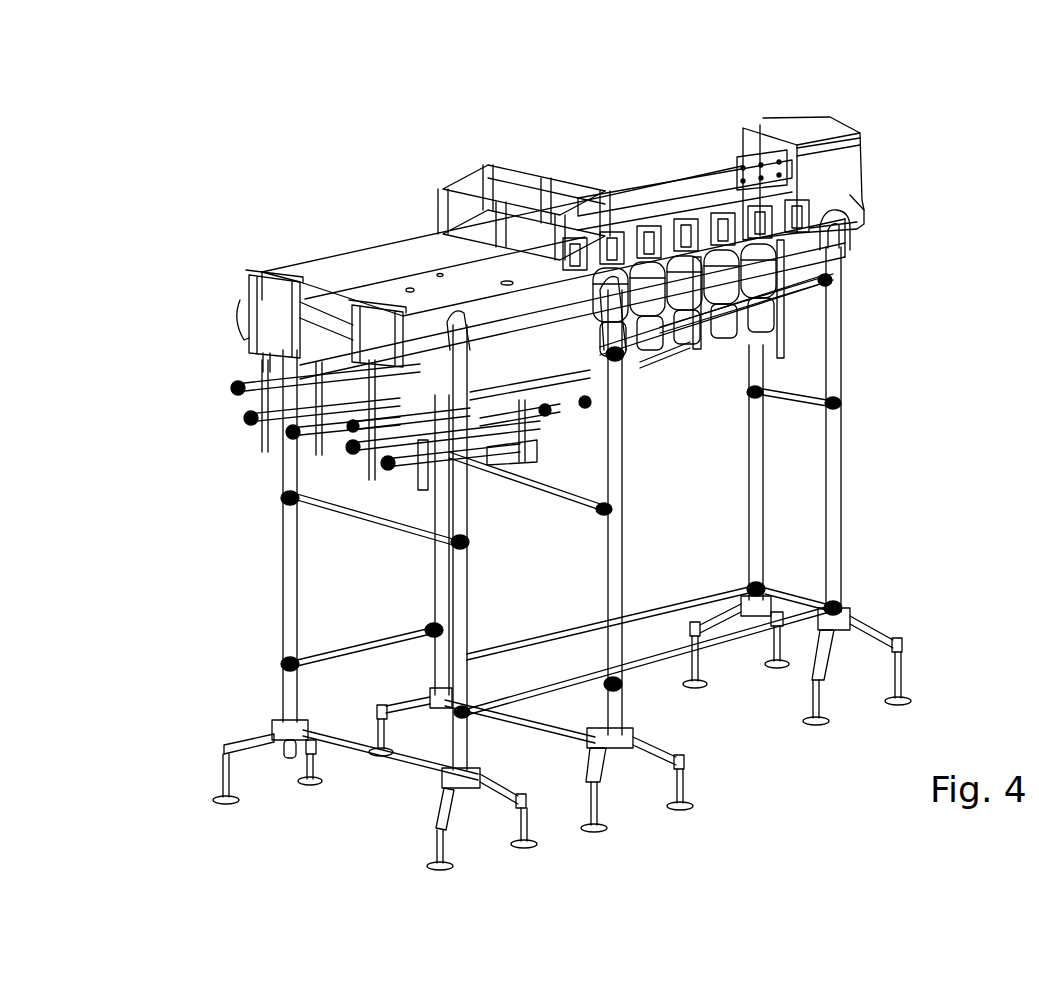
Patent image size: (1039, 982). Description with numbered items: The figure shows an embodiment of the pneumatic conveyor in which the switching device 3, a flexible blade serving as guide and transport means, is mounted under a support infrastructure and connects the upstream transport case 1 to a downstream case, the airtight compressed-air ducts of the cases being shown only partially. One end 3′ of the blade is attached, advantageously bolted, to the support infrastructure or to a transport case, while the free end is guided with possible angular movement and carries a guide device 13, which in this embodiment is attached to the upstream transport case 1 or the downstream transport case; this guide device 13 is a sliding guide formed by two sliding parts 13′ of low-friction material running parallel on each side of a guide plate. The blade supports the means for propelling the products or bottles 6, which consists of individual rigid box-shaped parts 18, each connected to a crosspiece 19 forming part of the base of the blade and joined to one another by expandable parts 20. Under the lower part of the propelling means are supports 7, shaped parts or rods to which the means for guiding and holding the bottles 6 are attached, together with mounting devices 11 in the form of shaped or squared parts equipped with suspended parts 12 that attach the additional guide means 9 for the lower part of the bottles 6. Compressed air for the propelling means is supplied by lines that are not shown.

The upstream transport case 1 is at (355, 318).
The switching device 3 is at (690, 193).
The end of the switching device 3′ is at (757, 145).
The products or bottles 6 is at (745, 343).
The supports 7 is at (792, 297).
The additional guide means 9 is at (650, 328).
The mounting devices 11 is at (764, 312).
The suspended parts 12 is at (703, 360).
The guide device 13 is at (543, 150).
The sliding parts 13′ is at (478, 210).
The individual rigid box-shaped parts 18 is at (673, 203).
The crosspiece 19 is at (720, 190).
The expandable parts 20 is at (845, 243).